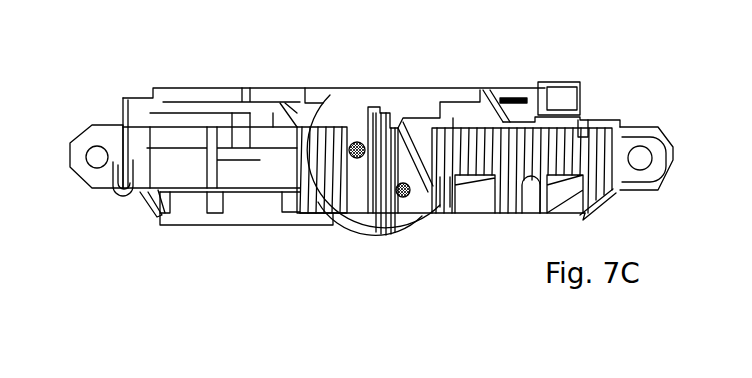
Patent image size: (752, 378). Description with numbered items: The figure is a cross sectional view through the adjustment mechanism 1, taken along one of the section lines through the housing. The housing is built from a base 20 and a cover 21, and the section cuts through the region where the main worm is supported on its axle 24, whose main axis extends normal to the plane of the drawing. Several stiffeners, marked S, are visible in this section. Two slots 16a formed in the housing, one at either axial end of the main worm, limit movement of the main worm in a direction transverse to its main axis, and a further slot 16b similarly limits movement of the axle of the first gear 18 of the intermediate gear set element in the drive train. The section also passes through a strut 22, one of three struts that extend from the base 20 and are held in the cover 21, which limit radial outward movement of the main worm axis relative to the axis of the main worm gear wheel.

The adjustment mechanism 1 is at (371, 161).
The base 20 is at (608, 145).
The cover 21 is at (315, 92).
The struts 22 is at (378, 107).
The axle 24 is at (352, 142).
The slots 16a is at (353, 176).
The further slot 16b is at (402, 198).
The first gear 18 is at (437, 205).